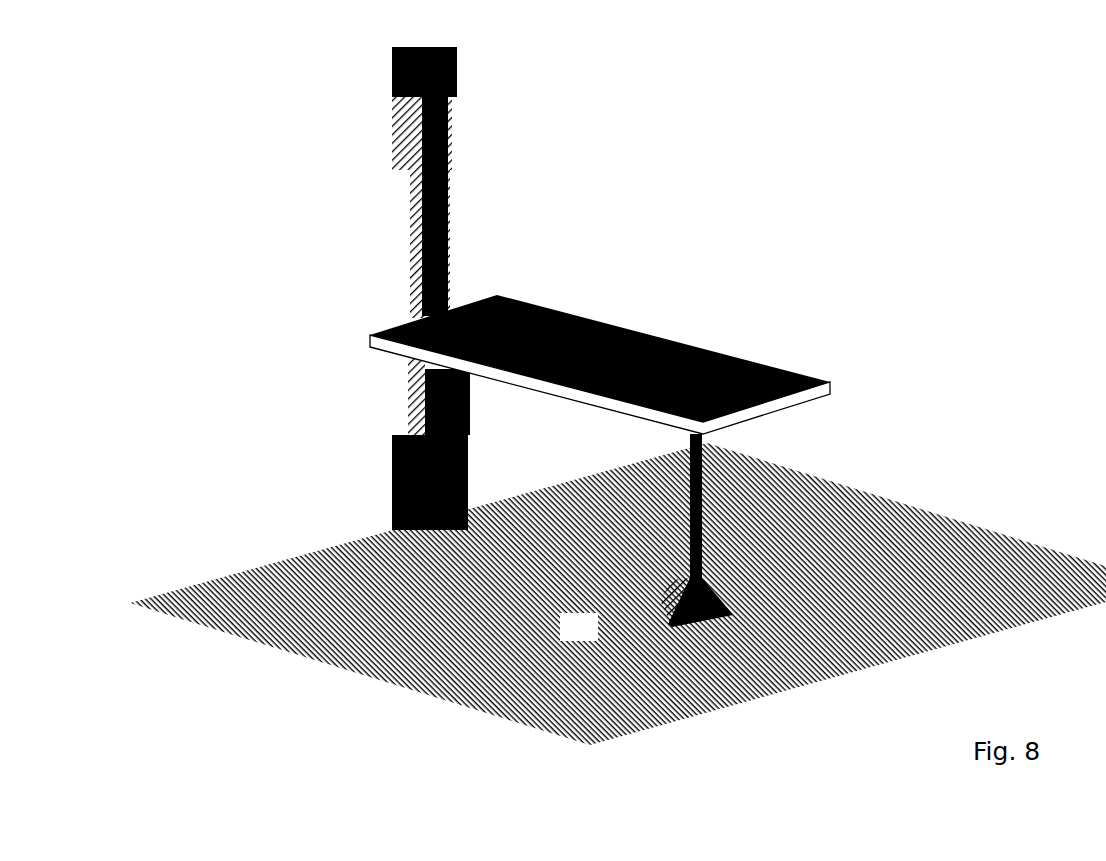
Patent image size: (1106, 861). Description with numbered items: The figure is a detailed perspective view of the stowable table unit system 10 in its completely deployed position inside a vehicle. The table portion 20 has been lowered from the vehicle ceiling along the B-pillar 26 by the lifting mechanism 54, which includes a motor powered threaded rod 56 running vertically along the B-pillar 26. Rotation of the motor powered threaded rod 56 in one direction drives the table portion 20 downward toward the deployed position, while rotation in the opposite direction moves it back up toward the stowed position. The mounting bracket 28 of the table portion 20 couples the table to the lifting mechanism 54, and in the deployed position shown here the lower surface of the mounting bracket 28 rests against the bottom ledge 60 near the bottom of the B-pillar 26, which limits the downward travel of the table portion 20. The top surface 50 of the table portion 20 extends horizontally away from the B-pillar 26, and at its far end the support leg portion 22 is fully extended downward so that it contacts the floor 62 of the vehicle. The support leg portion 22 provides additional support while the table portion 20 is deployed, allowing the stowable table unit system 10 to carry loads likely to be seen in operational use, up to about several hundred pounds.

The stowable table unit system 10 is at (618, 396).
The table portion 20 is at (638, 469).
The support leg portion 22 is at (687, 555).
The B-pillar 26 is at (457, 70).
The mounting bracket 28 is at (470, 418).
The top surface 50 is at (718, 348).
The lifting mechanism 54 is at (400, 403).
The motor powered threaded rod 56 is at (449, 233).
The bottom ledge 60 is at (392, 442).
The floor 62 is at (740, 657).